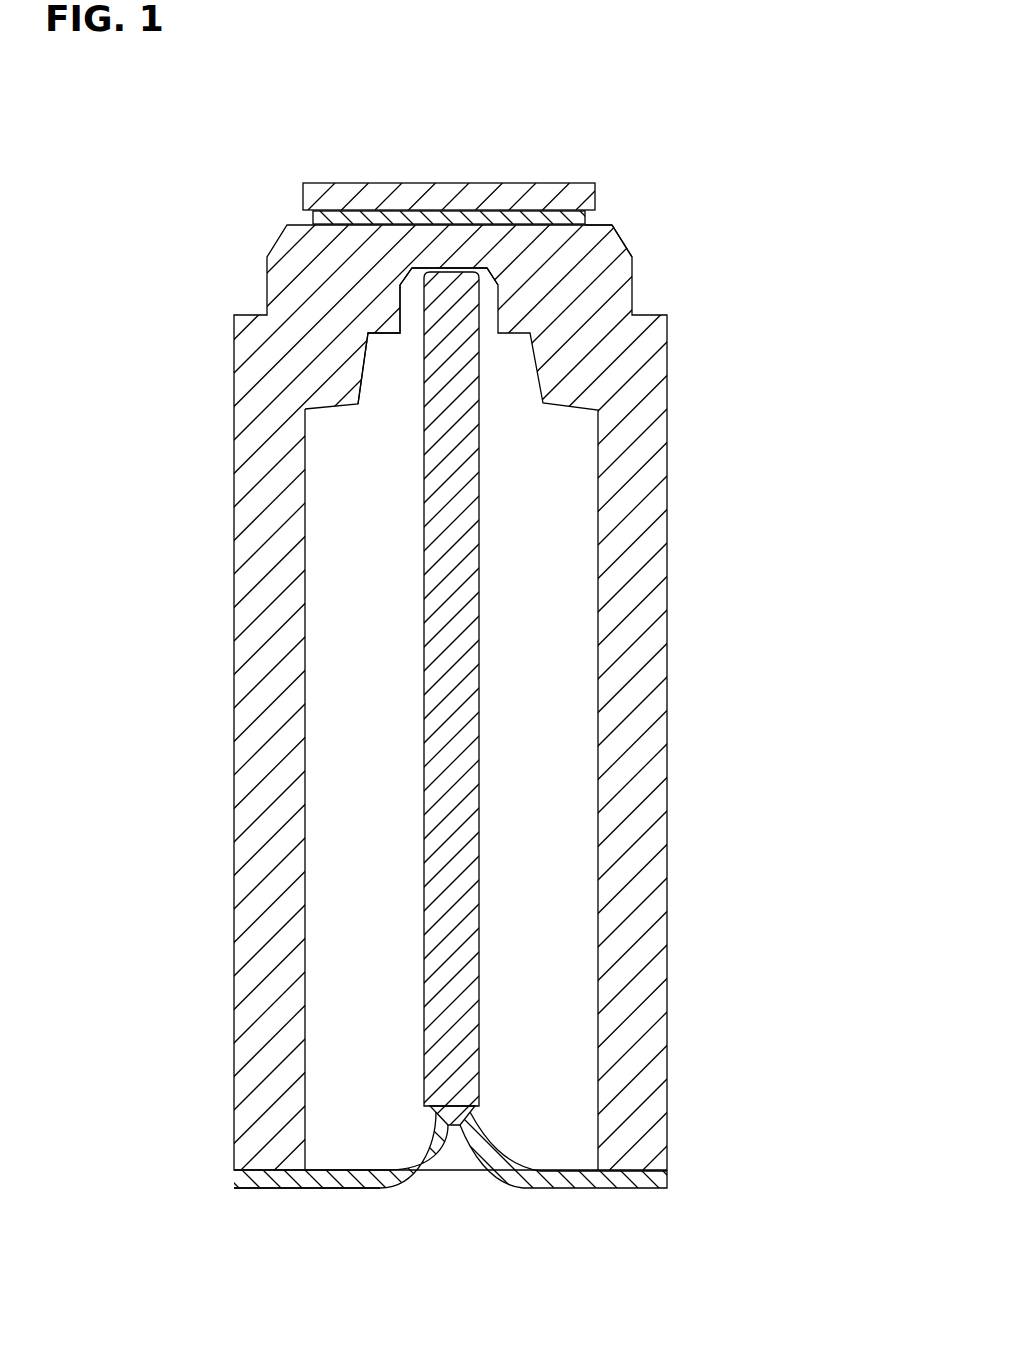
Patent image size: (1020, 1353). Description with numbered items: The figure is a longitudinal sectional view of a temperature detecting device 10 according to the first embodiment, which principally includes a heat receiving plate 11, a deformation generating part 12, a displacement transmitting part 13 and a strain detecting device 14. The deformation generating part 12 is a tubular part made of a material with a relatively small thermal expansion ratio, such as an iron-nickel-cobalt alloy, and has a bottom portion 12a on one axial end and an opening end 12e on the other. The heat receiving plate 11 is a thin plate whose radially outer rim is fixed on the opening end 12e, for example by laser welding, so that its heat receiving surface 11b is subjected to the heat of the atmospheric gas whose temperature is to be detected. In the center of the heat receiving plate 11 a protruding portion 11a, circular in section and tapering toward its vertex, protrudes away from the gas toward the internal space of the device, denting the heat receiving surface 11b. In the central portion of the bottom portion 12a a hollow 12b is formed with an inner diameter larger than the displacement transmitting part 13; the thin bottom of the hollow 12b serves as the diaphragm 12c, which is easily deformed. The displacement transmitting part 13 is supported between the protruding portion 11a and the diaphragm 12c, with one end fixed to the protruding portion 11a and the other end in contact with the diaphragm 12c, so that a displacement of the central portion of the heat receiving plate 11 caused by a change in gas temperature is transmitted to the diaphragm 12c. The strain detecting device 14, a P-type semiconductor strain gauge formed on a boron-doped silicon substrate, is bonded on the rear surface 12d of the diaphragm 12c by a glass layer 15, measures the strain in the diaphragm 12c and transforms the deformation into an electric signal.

The temperature detecting device 10 is at (606, 114).
The heat receiving plate 11 is at (537, 1178).
The protruding portion 11a is at (413, 1151).
The heat receiving surface 11b is at (338, 1190).
The deformation generating part 12 is at (654, 594).
The bottom portion 12a is at (630, 238).
The hollow 12b is at (402, 321).
The diaphragm 12c is at (447, 250).
The rear surface 12d is at (597, 224).
The opening end 12e is at (622, 1180).
The displacement transmitting part 13 is at (468, 497).
The strain detecting device 14 is at (533, 193).
The glass layer 15 is at (315, 221).